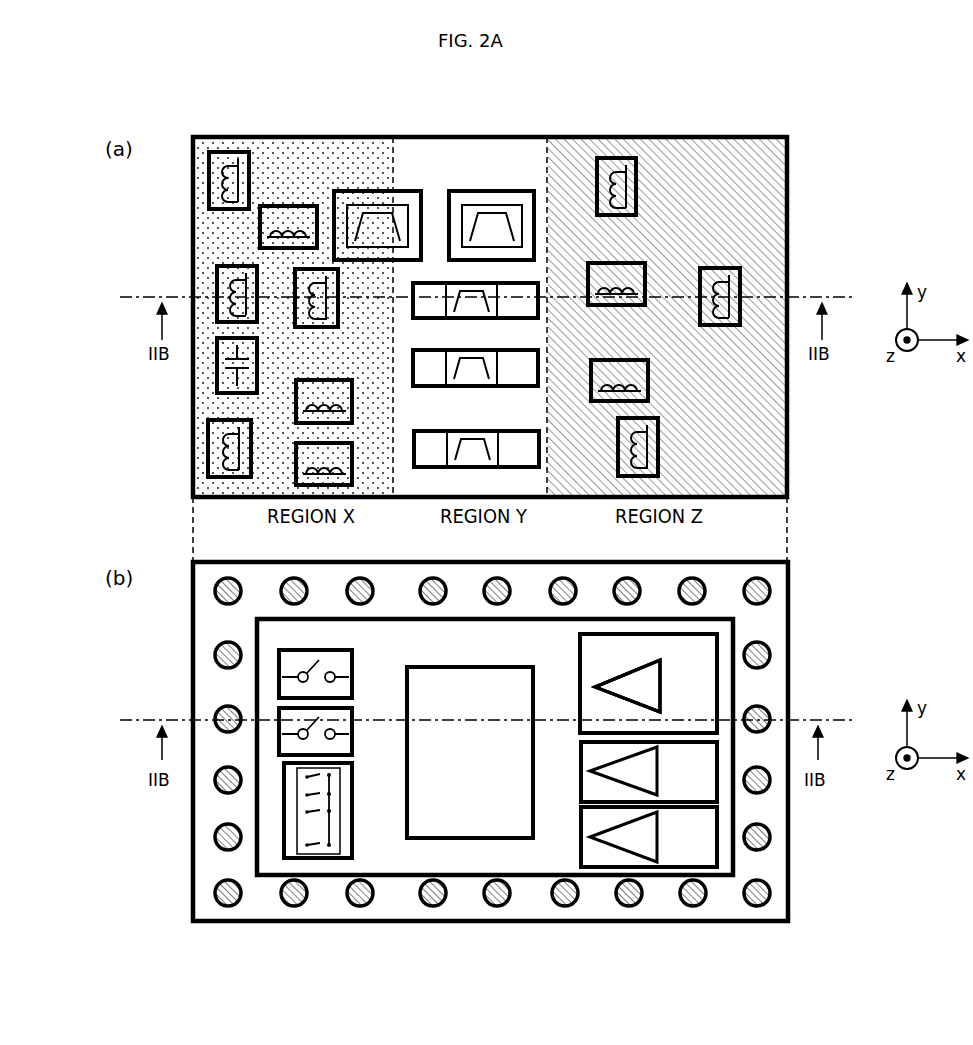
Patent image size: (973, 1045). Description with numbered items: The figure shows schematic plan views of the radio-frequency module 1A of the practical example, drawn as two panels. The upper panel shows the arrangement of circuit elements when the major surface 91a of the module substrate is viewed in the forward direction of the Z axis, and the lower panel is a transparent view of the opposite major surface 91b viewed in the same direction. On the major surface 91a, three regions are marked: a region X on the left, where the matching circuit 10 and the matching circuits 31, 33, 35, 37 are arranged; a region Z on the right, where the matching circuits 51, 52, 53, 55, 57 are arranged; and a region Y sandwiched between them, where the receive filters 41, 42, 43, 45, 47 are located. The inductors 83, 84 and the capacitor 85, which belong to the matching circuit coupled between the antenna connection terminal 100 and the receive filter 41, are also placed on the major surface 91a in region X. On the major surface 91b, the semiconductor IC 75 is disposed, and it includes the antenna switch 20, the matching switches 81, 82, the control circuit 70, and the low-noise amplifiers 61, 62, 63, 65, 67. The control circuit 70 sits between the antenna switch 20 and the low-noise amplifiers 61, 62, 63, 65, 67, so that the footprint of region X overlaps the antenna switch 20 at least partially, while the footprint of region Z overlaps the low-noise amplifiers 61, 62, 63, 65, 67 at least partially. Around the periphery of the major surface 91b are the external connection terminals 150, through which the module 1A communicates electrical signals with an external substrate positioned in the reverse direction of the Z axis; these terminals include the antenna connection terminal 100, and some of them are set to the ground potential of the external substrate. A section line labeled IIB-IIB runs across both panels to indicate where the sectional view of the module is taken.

The radio-frequency module 1A is at (818, 163).
The major surface 91a is at (775, 198).
The major surface 91b is at (776, 620).
The antenna connection terminal 100 is at (222, 902).
The external connection terminals 150 is at (221, 709).
The matching circuit 10 is at (251, 445).
The antenna switch 20 is at (352, 812).
The matching circuit 31 is at (352, 470).
The matching circuit 33 is at (352, 406).
The matching circuit 35 is at (283, 206).
The matching circuit 37 is at (251, 180).
The receive filter 41 is at (538, 366).
The receive filter 42 is at (539, 447).
The receive filter 43 is at (538, 300).
The receive filter 45 is at (496, 191).
The receive filter 47 is at (410, 191).
The matching circuit 51 is at (648, 380).
The matching circuit 52 is at (658, 445).
The matching circuit 53 is at (636, 200).
The matching circuit 55 is at (625, 305).
The matching circuit 57 is at (740, 312).
The low-noise amplifier 61 is at (581, 769).
The low-noise amplifier 62 is at (581, 834).
The low-noise amplifier 63 is at (580, 689).
The low-noise amplifier 65 is at (580, 713).
The low-noise amplifier 67 is at (580, 661).
The control circuit 70 is at (437, 667).
The semiconductor IC 75 is at (404, 632).
The matching switch 81 is at (352, 736).
The matching switch 82 is at (352, 679).
The inductor 83 is at (338, 310).
The inductor 84 is at (258, 290).
The capacitor 85 is at (257, 377).